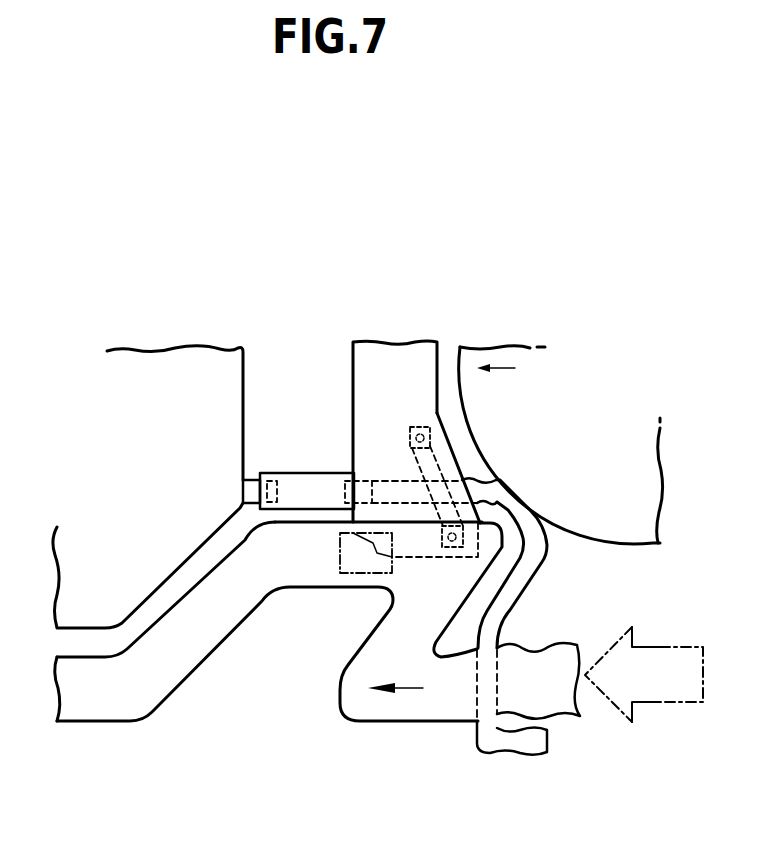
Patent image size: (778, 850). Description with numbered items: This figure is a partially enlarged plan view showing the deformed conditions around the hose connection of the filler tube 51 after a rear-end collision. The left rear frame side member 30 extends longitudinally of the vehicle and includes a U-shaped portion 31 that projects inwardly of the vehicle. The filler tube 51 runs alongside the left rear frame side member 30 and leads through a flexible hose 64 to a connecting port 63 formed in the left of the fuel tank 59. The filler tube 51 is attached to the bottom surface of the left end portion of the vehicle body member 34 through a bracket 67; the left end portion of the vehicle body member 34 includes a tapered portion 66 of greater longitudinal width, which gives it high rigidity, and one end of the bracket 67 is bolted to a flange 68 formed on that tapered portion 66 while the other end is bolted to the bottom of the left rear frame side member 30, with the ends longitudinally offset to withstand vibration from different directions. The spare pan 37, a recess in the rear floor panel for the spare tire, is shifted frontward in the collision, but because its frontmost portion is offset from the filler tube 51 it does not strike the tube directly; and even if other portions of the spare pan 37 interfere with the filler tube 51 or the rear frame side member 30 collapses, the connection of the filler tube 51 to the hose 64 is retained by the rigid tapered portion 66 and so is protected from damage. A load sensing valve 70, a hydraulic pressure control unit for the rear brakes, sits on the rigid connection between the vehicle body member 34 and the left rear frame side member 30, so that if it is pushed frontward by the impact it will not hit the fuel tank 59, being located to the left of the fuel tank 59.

The rear frame side member 30 is at (190, 653).
The U-shaped portion 31 is at (323, 512).
The vehicle body member 34 is at (388, 316).
The spare pan 37 is at (638, 547).
The filler tube 51 is at (516, 756).
The fuel tank 59 is at (245, 362).
The connecting port 63 is at (253, 480).
The flexible hose 64 is at (313, 473).
The tapered portion 66 is at (458, 462).
The bracket 67 is at (413, 460).
The flange 68 is at (430, 427).
The load sensing valve 70 is at (352, 574).